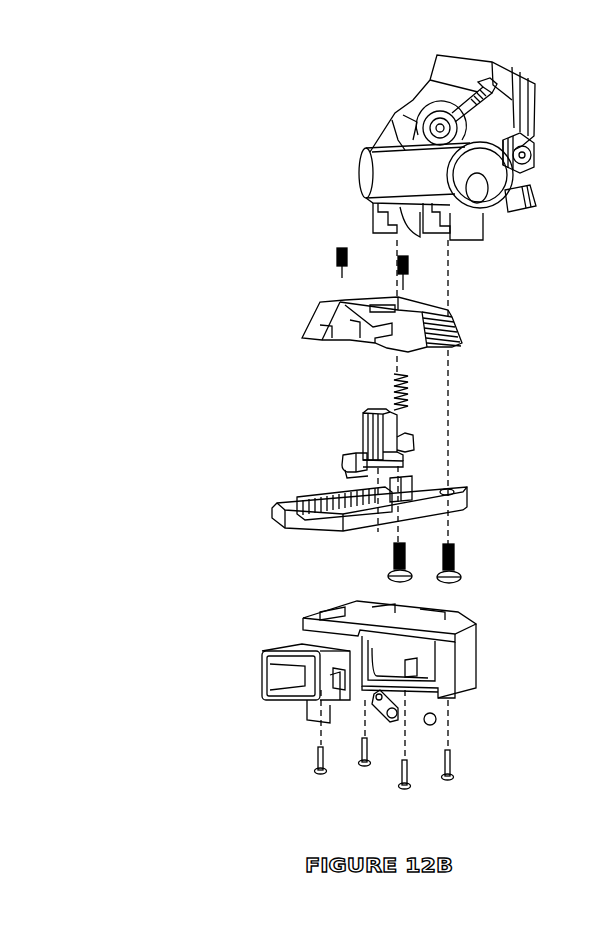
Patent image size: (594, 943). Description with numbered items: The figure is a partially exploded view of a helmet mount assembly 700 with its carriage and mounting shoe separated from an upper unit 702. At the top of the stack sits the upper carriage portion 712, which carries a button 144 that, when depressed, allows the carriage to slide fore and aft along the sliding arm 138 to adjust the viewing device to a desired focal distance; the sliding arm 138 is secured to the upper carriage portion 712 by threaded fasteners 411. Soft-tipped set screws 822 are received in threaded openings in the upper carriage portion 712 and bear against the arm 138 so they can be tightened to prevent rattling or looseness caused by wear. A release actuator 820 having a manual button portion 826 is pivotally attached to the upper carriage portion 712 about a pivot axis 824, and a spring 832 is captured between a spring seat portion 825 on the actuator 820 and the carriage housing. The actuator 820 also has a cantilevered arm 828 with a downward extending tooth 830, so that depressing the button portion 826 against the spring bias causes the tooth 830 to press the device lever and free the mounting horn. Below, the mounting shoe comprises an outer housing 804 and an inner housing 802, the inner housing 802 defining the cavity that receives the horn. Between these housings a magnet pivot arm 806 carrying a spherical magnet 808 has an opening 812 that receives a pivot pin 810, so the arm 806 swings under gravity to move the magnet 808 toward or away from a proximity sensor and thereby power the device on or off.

The assembly 700 is at (150, 274).
The motor unit 702 is at (362, 125).
The soft-tipped set screw 822 is at (335, 250).
The upper carriage portion 712 is at (300, 314).
The button 144 is at (456, 340).
The spring 832 is at (393, 378).
The manual button portion 826 is at (368, 410).
The release actuator 820 is at (363, 432).
The spring seat portion 825 is at (412, 433).
The pivot axis 824 is at (415, 447).
The cantilevered arm 828 is at (345, 459).
The tooth 830 is at (348, 477).
The sliding arm 138 is at (295, 520).
The threaded fasteners 411 is at (390, 567).
The outer housing 804 is at (462, 658).
The inner housing 802 is at (260, 672).
The pivot pin 810 is at (337, 690).
The magnet pivot arm 806 is at (392, 722).
The opening 812 is at (382, 702).
The magnet 808 is at (437, 724).